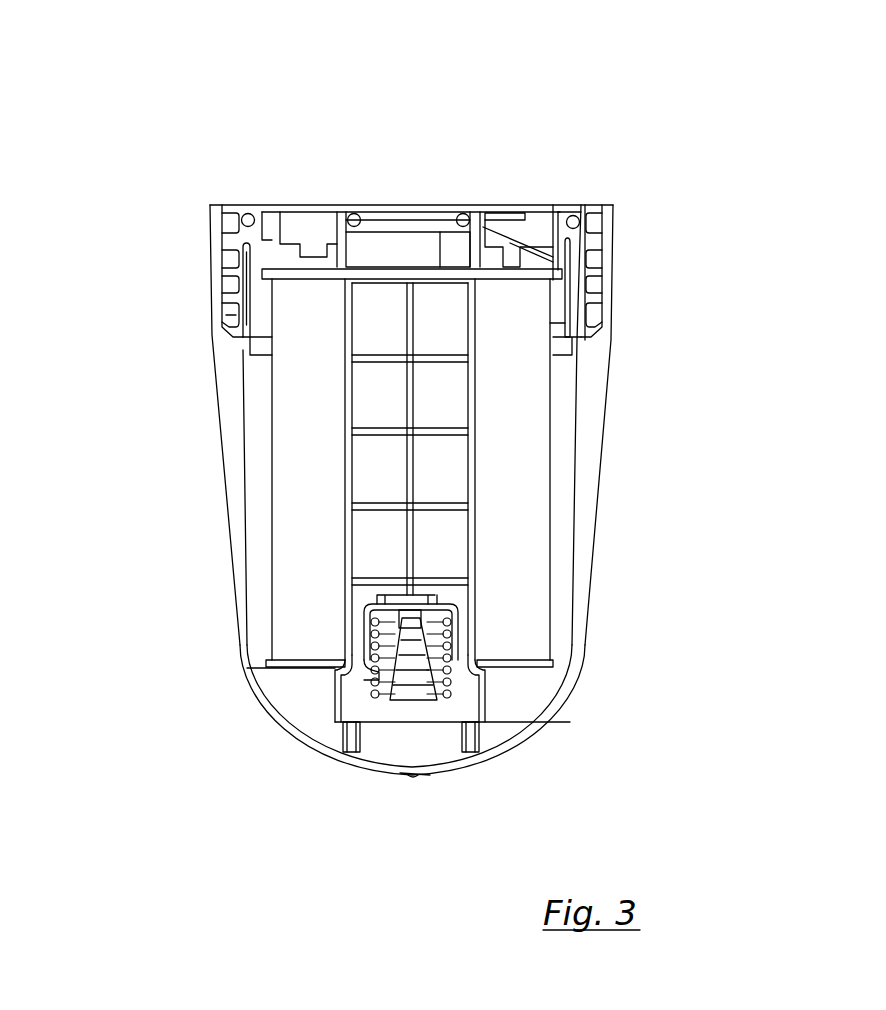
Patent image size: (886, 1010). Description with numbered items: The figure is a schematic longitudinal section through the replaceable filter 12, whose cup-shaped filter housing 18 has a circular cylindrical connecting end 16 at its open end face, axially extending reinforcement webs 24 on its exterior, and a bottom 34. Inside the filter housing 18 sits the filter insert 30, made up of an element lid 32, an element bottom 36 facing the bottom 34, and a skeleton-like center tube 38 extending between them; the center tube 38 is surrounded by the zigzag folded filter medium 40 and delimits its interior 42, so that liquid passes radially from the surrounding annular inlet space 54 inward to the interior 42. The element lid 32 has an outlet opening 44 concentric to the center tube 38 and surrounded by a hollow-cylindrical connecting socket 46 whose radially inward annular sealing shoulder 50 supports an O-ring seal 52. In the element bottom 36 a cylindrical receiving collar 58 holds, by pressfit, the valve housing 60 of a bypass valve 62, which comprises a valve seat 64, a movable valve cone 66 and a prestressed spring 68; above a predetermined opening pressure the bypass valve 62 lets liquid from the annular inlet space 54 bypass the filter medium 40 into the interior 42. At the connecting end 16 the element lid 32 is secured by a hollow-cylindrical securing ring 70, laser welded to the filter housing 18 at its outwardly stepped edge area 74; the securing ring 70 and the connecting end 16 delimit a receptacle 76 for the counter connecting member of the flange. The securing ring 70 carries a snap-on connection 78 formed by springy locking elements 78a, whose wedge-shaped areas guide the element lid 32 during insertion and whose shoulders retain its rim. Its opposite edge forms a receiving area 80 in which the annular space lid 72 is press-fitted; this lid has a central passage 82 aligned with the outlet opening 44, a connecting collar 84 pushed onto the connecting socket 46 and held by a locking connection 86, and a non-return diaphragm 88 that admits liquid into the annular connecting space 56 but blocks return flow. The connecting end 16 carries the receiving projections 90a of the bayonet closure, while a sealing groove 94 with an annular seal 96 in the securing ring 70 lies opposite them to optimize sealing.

The replaceable filter 12 is at (117, 592).
The connecting end 16 is at (213, 252).
The filter housing 18 is at (247, 650).
The reinforcement webs 24 is at (235, 500).
The filter insert 30 is at (315, 640).
The element lid 32 is at (597, 293).
The bottom 34 is at (432, 768).
The element bottom 36 is at (515, 665).
The center tube 38 is at (410, 507).
The filter medium 40 is at (500, 465).
The interior 42 is at (437, 550).
The outlet opening 44 is at (383, 280).
The connecting socket 46 is at (420, 232).
The annular sealing shoulder 50 is at (395, 232).
The O-ring seal 52 is at (350, 205).
The annular inlet space 54 is at (555, 608).
The annular connecting space 56 is at (547, 205).
The receiving collar 58 is at (487, 682).
The valve housing 60 is at (487, 716).
The bypass valve 62 is at (414, 712).
The valve seat 64 is at (342, 640).
The valve cone 66 is at (373, 683).
The spring 68 is at (443, 777).
The securing ring 70 is at (240, 338).
The annular space lid 72 is at (553, 205).
The edge area 74 is at (253, 355).
The receptacle 76 is at (605, 345).
The snap-on connection 78 is at (243, 259).
The locking elements 78a is at (265, 300).
The receiving area 80 is at (583, 205).
The passage 82 is at (487, 207).
The connecting collar 84 is at (560, 262).
The locking connection 86 is at (323, 205).
The non-return diaphragm 88 is at (300, 205).
The receiving projections 90a is at (222, 230).
The sealing groove 94 is at (257, 205).
The annular seal 96 is at (238, 217).